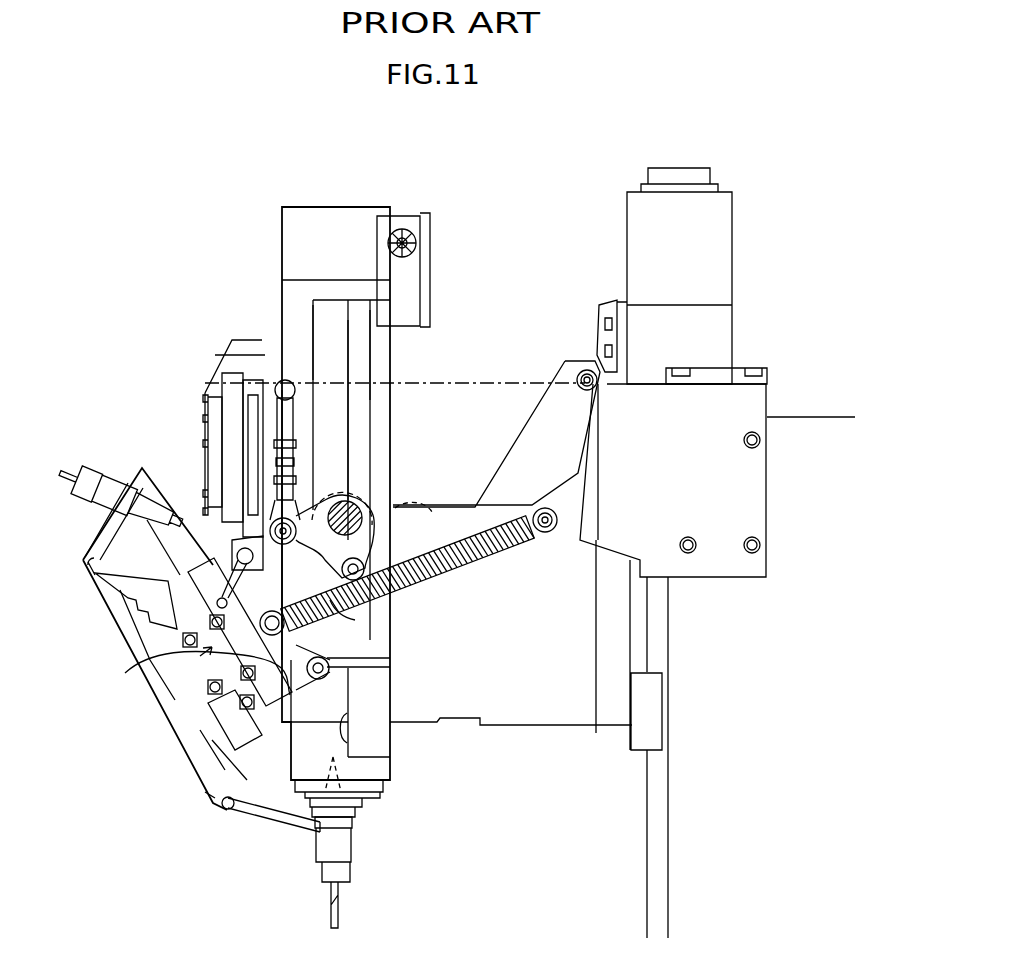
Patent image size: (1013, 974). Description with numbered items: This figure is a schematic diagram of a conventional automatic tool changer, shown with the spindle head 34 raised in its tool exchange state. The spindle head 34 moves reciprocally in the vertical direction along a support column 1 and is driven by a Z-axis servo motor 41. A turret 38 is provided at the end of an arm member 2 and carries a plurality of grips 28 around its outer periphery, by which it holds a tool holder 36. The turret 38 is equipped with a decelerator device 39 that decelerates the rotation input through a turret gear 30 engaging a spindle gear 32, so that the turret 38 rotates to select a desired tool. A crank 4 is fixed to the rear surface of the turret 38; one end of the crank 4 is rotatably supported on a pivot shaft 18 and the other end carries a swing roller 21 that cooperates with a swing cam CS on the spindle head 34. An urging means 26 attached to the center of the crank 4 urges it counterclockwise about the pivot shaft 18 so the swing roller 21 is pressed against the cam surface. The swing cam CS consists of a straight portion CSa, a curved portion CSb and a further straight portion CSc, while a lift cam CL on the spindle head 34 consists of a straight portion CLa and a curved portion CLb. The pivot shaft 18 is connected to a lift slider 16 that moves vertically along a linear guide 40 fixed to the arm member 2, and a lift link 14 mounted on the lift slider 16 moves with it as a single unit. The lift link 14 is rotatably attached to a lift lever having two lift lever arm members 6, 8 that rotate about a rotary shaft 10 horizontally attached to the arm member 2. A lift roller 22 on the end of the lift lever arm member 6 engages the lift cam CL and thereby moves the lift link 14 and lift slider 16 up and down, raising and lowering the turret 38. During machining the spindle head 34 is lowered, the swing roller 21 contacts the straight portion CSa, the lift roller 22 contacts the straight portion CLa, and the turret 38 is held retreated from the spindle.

The support column 1 is at (665, 823).
The arm member 2 is at (487, 383).
The crank 4 is at (230, 700).
The lift lever arm member 6 is at (372, 522).
The lift lever arm member 8 is at (264, 564).
The rotary shaft 10 is at (355, 505).
The lift link 14 is at (250, 448).
The lift slider 16 is at (238, 418).
The pivot shaft 18 is at (208, 552).
The swing roller 21 is at (340, 670).
The lift roller 22 is at (395, 510).
The urging means 26 is at (450, 575).
The grip 28 is at (92, 585).
The turret gear 30 is at (215, 770).
The spindle gear 32 is at (285, 820).
The spindle head 34 is at (498, 725).
The tool holder 36 is at (352, 845).
The turret 38 is at (137, 628).
The decelerator device 39 is at (160, 666).
The linear guide 40 is at (222, 484).
The Z-axis servo motor 41 is at (728, 250).
The swing cam CS is at (313, 313).
The straight portion CSa is at (315, 338).
The curved portion CSb is at (352, 645).
The straight portion CSc is at (365, 740).
The lift cam CL is at (365, 438).
The straight portion CLa is at (370, 402).
The curved portion CLb is at (352, 615).